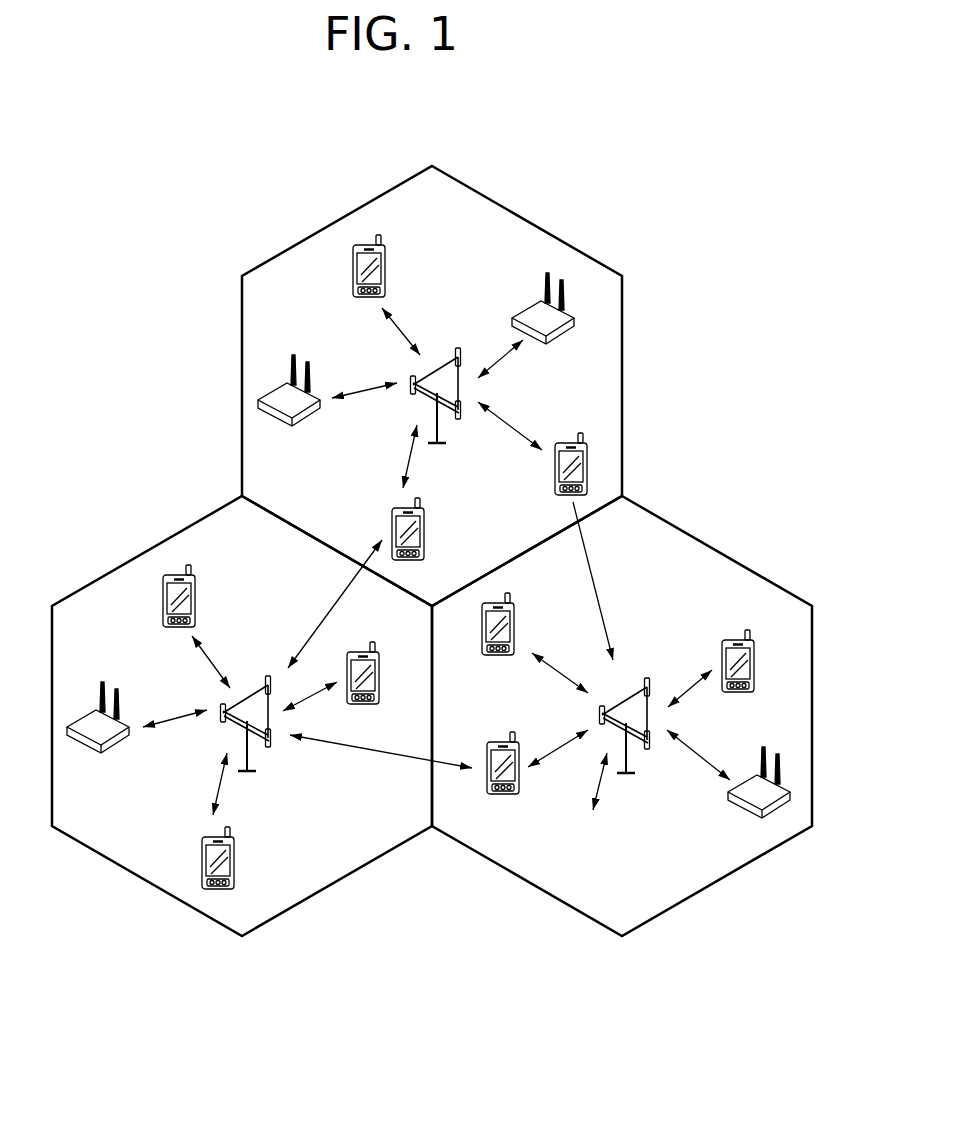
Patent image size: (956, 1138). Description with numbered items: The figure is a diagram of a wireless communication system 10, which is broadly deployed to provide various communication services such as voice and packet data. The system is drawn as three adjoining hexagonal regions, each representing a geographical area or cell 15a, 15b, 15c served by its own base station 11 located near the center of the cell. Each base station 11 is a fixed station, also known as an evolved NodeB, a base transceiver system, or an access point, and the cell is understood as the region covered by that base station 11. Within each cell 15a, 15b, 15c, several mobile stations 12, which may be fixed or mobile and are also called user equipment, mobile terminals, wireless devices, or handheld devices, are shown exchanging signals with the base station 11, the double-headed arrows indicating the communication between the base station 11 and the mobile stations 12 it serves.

The wireless communication system 10 is at (707, 282).
The base station 11 is at (447, 367).
The mobile station 12 is at (386, 263).
The cell 15a is at (623, 372).
The cell 15b is at (745, 560).
The cell 15c is at (122, 560).